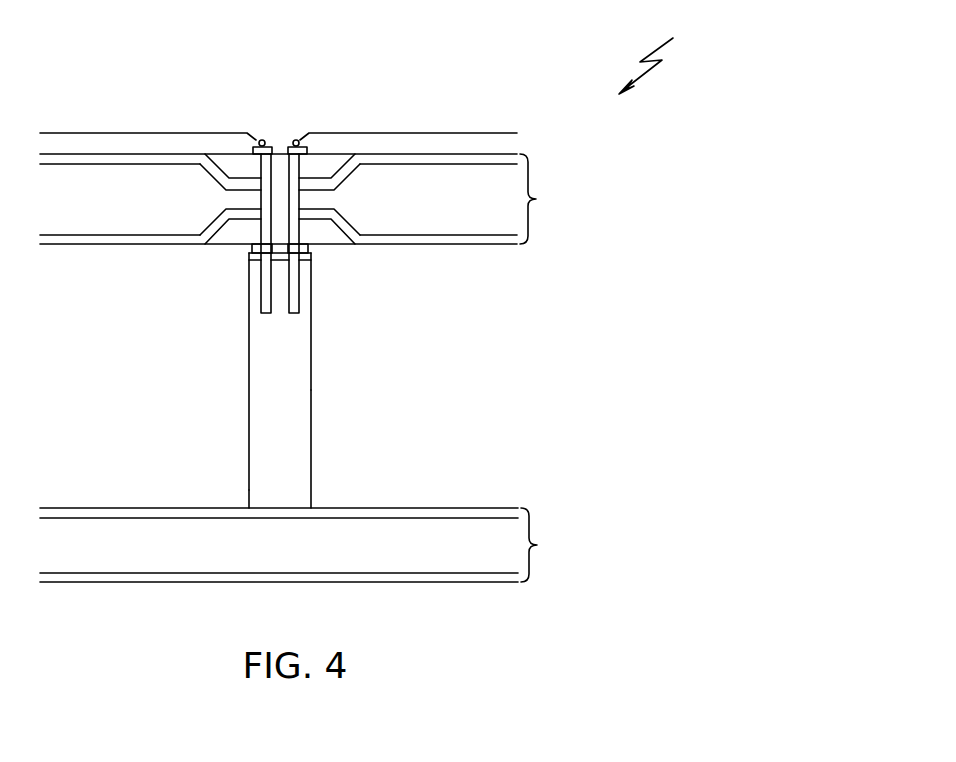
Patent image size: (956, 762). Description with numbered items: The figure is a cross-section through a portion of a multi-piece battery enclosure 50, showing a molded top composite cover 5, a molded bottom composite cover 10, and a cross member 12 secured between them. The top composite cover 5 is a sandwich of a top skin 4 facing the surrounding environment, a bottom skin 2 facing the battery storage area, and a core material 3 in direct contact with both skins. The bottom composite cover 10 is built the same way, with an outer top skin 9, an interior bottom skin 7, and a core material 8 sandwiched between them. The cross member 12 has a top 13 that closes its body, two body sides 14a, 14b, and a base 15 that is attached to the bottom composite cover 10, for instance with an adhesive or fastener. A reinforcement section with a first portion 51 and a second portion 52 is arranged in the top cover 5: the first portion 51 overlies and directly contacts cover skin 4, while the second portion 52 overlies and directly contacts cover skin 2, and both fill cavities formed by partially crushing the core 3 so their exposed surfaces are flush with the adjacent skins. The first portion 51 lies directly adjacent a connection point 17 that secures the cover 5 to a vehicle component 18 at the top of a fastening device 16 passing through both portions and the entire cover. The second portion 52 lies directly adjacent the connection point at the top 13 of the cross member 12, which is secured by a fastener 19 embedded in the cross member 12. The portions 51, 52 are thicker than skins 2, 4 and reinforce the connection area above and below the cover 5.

The connector structure 50 is at (663, 54).
The vehicle component 18 is at (445, 131).
The top composite cover 5 is at (545, 199).
The top skin 4 is at (500, 164).
The core material 3 is at (445, 237).
The bottom skin 2 is at (481, 245).
The first portion 51 is at (226, 170).
The second portion 52 is at (342, 222).
The fastening device 16 is at (281, 152).
The connection point 17 is at (298, 141).
The top 13 is at (315, 251).
The fastener 19 is at (288, 298).
The side 14a is at (249, 388).
The side 14b is at (311, 388).
The cross member 12 is at (311, 462).
The base 15 is at (249, 507).
The bottom skin 7 is at (390, 511).
The core material 8 is at (448, 522).
The top skin 9 is at (473, 577).
The bottom composite cover 10 is at (549, 545).